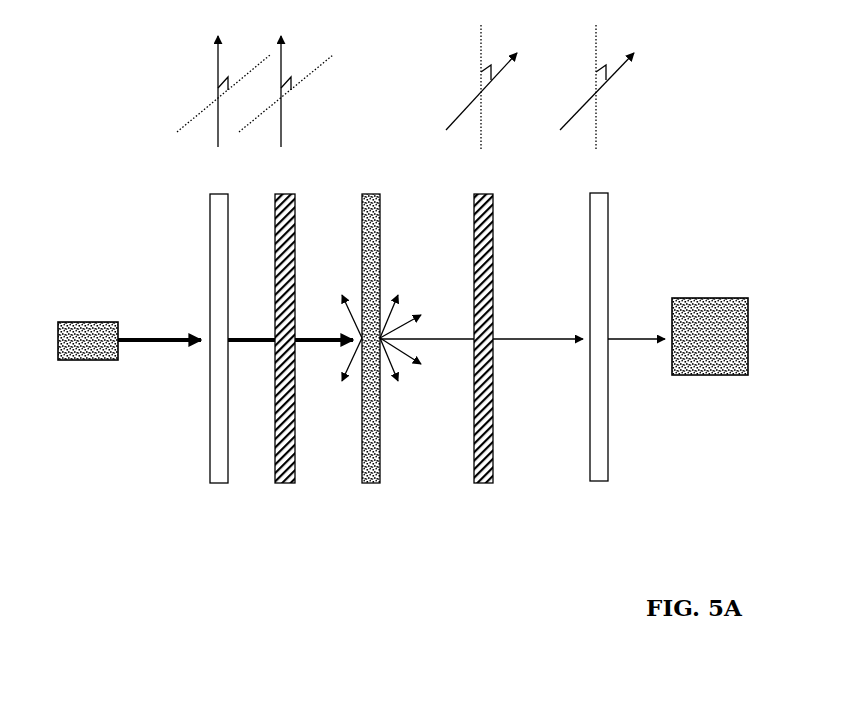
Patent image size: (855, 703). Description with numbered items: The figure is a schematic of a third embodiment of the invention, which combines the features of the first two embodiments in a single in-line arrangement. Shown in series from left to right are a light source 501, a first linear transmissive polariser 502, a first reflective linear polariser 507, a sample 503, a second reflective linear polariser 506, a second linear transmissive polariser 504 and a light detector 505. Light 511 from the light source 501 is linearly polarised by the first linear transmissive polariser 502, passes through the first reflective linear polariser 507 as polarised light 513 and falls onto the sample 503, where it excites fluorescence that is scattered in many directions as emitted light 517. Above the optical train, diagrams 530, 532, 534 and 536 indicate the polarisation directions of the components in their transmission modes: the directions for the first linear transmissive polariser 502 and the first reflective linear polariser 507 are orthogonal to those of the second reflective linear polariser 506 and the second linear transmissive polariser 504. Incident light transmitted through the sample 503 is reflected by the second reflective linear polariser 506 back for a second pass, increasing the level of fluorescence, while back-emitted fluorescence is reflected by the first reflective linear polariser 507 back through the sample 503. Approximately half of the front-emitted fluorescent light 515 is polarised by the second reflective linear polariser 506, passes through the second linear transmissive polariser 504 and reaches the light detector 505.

The light source 501 is at (92, 348).
The first linear transmissive polariser 502 is at (222, 483).
The sample 503 is at (372, 483).
The second linear transmissive polariser 504 is at (603, 481).
The light detector 505 is at (717, 365).
The second reflective linear polariser 506 is at (483, 483).
The first reflective linear polariser 507 is at (286, 483).
The light 511 is at (159, 328).
The polarized light beam 513 is at (324, 327).
The front-emitted fluorescent light 515 is at (481, 354).
The scattered light 517 is at (394, 330).
The diagram 530 is at (223, 76).
The diagram 532 is at (286, 76).
The diagram 534 is at (481, 77).
The diagram 536 is at (597, 77).